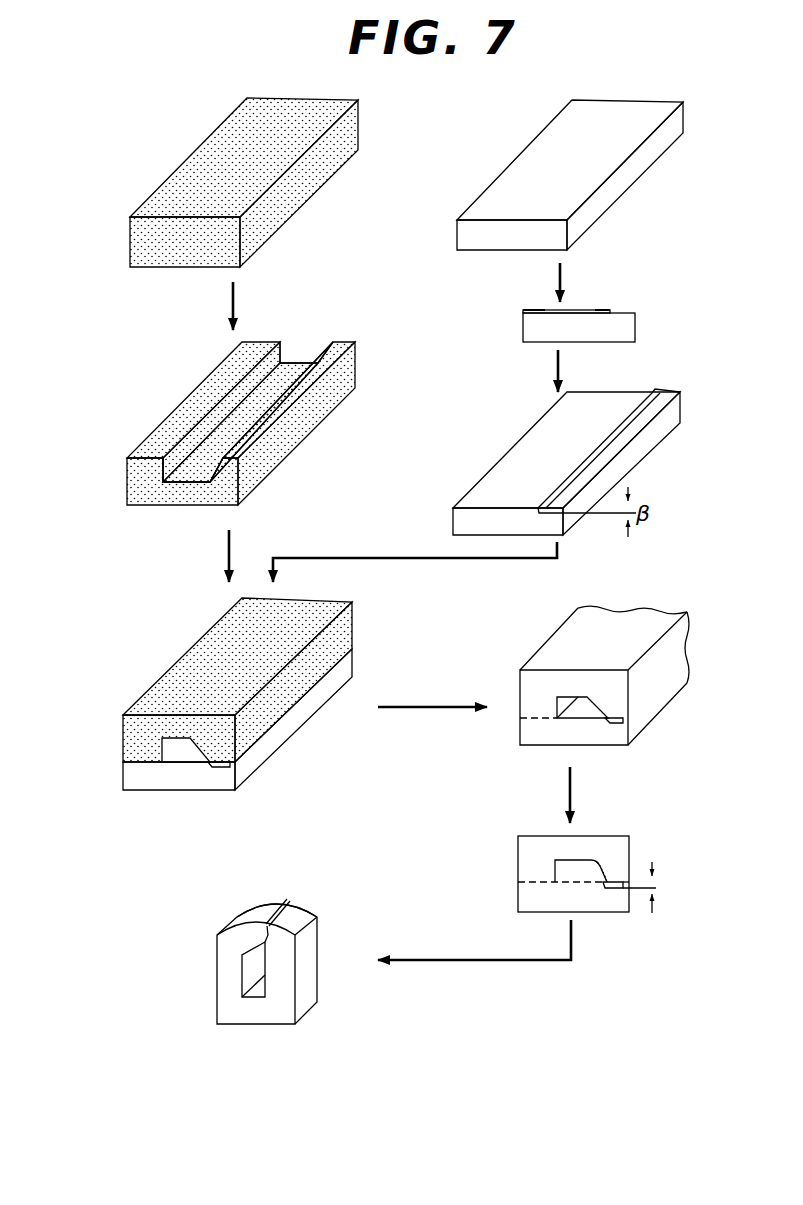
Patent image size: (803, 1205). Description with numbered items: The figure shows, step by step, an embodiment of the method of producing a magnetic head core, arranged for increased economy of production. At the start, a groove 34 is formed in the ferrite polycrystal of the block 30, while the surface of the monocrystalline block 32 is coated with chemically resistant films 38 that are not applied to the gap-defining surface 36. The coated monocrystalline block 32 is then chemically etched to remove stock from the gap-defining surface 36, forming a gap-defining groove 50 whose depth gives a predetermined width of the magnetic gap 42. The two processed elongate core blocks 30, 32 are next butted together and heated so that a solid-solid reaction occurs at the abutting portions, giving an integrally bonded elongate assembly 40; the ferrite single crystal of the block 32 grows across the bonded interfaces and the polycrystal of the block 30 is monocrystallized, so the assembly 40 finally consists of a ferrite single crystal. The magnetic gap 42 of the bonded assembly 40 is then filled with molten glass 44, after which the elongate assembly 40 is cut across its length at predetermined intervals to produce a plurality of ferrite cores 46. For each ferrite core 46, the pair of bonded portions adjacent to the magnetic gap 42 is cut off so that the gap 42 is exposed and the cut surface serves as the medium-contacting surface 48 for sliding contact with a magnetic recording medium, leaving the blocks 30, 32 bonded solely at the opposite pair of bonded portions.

The block 30 is at (176, 161).
The monocrystalline block 32 is at (508, 157).
The groove 34 is at (250, 407).
The gap-defining surface 36 is at (613, 312).
The chemically resistant films 38 is at (545, 310).
The elongate assembly 40 is at (533, 645).
The magnetic gap 42 is at (614, 730).
The molten glass 44 is at (605, 873).
The ferrite core 46 is at (518, 862).
The medium-contacting surface 48 is at (257, 907).
The gap-defining groove 50 is at (600, 460).